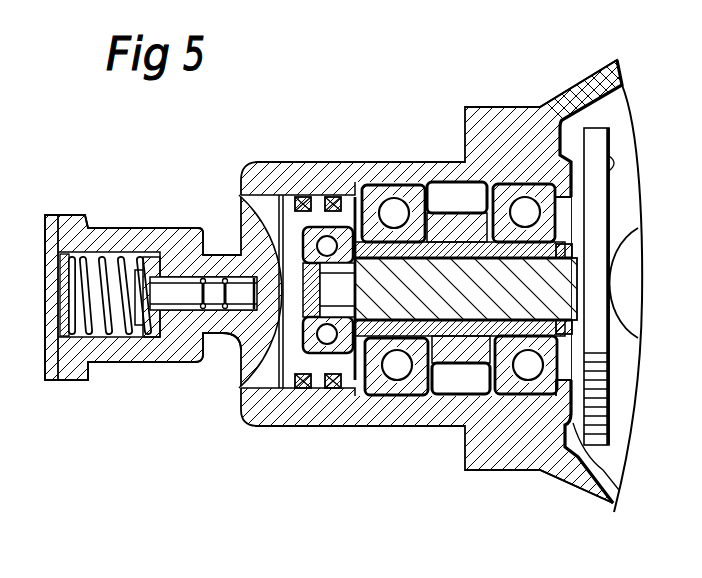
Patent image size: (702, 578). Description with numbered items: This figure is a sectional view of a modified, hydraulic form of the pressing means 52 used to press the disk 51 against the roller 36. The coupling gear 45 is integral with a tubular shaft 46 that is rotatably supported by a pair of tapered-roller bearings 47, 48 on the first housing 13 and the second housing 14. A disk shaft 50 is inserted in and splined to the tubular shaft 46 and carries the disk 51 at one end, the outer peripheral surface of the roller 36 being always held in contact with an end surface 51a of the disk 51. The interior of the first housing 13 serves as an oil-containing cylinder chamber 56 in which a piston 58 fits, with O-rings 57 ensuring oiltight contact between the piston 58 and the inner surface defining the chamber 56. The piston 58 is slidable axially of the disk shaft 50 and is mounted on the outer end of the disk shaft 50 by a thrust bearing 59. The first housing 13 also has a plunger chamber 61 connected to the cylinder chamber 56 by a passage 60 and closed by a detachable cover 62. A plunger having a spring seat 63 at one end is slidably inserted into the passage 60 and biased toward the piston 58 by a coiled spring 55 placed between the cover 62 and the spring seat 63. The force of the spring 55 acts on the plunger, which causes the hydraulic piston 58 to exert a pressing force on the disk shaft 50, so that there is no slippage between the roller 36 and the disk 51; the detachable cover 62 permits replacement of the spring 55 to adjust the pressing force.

The first housing 13 is at (267, 175).
The second housing 14 is at (578, 477).
The roller 36 is at (633, 270).
The coupling gear 45 is at (450, 380).
The tubular shaft 46 is at (187, 283).
The tapered-roller bearing 47 is at (388, 396).
The tapered-roller bearing 48 is at (540, 392).
The disk shaft 50 is at (463, 308).
The disk 51 is at (613, 400).
The end surface 51a is at (553, 118).
The pressing means 52 is at (72, 210).
The coiled spring 55 is at (122, 250).
The cylinder chamber 56 is at (270, 427).
The O-rings 57 is at (333, 393).
The piston 58 is at (317, 210).
The thrust bearing 59 is at (345, 237).
The passage 60 is at (234, 350).
The plunger chamber 61 is at (117, 337).
The cover 62 is at (50, 365).
The spring seat 63 is at (157, 330).